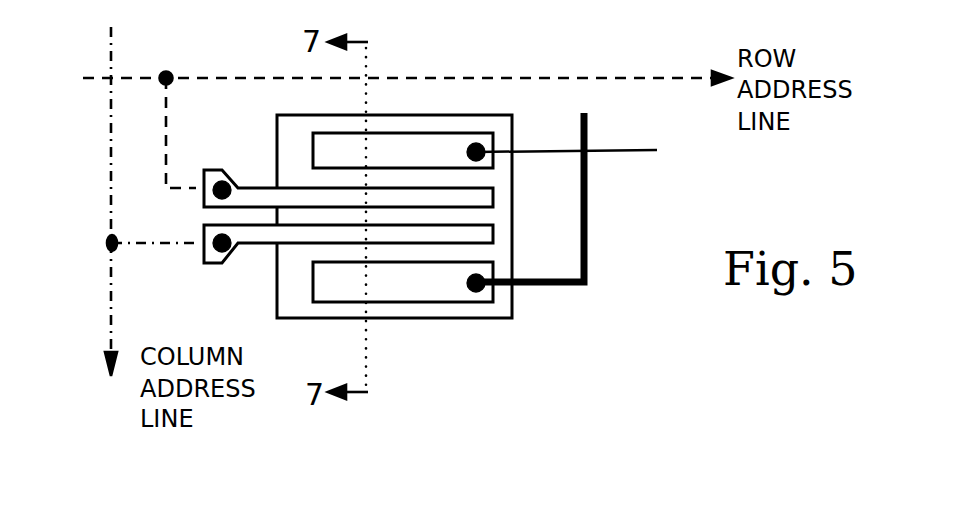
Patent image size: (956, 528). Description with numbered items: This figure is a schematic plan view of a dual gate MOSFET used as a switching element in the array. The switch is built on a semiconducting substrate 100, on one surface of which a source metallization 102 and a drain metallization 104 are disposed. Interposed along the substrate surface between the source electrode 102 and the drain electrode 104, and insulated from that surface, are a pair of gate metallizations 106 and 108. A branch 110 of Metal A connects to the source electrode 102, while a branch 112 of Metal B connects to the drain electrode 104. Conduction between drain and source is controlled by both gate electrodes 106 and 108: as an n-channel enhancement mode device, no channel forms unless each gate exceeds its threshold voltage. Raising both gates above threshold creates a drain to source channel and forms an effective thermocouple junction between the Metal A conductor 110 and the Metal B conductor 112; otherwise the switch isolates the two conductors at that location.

The semiconducting substrate 100 is at (478, 308).
The source metallization 102 is at (432, 147).
The drain metallization 104 is at (420, 282).
The gate metallization 106 is at (267, 198).
The gate metallization 108 is at (267, 235).
The branch of Metal A 110 is at (618, 158).
The branch of Metal B 112 is at (598, 238).